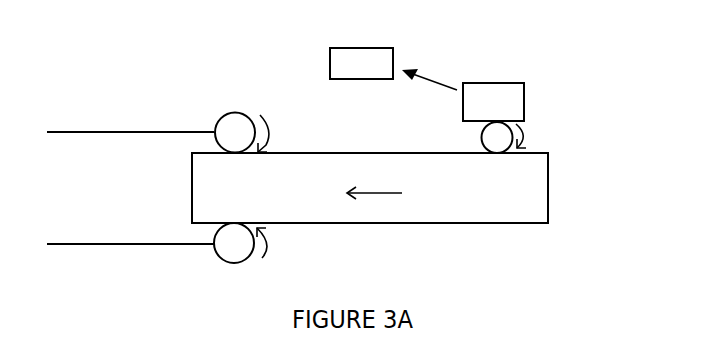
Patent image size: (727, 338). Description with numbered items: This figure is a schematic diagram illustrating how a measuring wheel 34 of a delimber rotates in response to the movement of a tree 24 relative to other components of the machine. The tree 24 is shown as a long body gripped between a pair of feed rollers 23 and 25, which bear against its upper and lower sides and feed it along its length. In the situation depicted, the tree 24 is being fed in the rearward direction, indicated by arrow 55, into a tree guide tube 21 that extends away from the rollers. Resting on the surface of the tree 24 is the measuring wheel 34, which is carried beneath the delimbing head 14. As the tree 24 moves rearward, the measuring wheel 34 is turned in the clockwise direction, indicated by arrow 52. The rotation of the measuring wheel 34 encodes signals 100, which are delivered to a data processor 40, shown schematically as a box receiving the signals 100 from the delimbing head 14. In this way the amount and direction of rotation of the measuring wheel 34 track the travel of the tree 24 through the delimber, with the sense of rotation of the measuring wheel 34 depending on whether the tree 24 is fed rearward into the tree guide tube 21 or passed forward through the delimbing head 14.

The tree guide tube 21 is at (105, 132).
The feed roller 23 is at (235, 133).
The feed roller 25 is at (234, 243).
The tree 24 is at (525, 182).
The arrow 55 is at (374, 184).
The measuring wheel 34 is at (481, 143).
The arrow 52 is at (535, 137).
The delimbing head 14 is at (493, 102).
The data processor 40 is at (361, 63).
The signals 100 is at (433, 69).